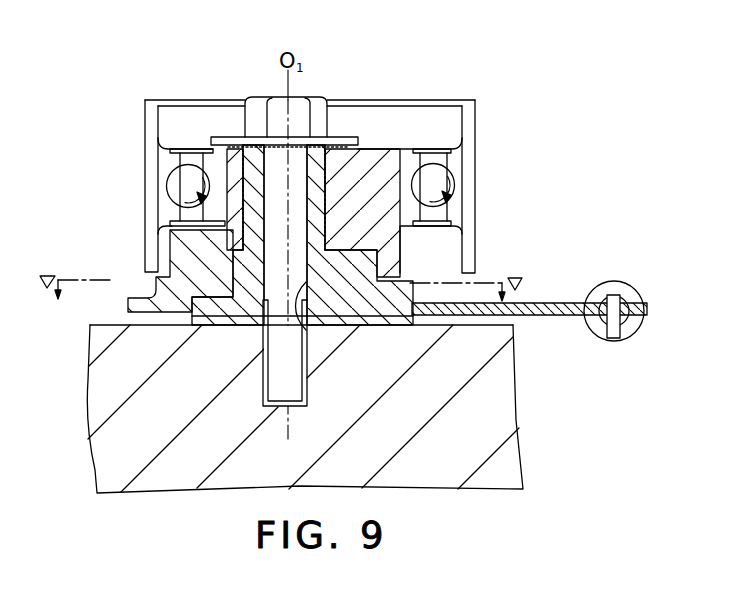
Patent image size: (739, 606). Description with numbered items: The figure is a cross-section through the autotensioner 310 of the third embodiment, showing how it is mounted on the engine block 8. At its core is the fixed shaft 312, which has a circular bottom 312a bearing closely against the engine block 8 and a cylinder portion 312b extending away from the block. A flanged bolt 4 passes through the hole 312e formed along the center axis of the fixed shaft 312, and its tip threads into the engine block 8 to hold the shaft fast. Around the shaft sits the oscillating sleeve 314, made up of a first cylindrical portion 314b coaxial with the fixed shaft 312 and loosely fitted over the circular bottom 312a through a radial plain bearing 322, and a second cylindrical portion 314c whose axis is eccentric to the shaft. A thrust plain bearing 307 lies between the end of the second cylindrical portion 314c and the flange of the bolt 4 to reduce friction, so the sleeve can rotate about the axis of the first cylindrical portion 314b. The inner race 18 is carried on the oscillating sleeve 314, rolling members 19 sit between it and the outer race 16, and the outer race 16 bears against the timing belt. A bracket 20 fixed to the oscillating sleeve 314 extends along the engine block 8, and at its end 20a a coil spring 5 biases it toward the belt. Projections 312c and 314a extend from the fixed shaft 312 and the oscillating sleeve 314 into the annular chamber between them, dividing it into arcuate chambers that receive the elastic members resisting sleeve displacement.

The flanged bolt 4 is at (300, 100).
The coil spring 5 is at (622, 298).
The engine block 8 is at (508, 408).
The outer race 16 is at (465, 195).
The inner race 18 is at (410, 210).
The rolling members 19 is at (445, 180).
The bracket 20 is at (555, 303).
The end of the bracket 20a is at (625, 336).
The thrust plain bearing 307 is at (232, 135).
The autotensioner 310 is at (262, 76).
The fixed shaft 312 is at (215, 318).
The circular bottom 312a is at (250, 316).
The cylinder portion 312b is at (320, 150).
The projection 312c is at (368, 314).
The hole 312e is at (307, 347).
The oscillating sleeve 314 is at (380, 165).
The projection 314a is at (180, 325).
The first cylindrical portion 314b is at (157, 230).
The second cylindrical portion 314c is at (420, 110).
The radial plain bearing 322 is at (147, 252).